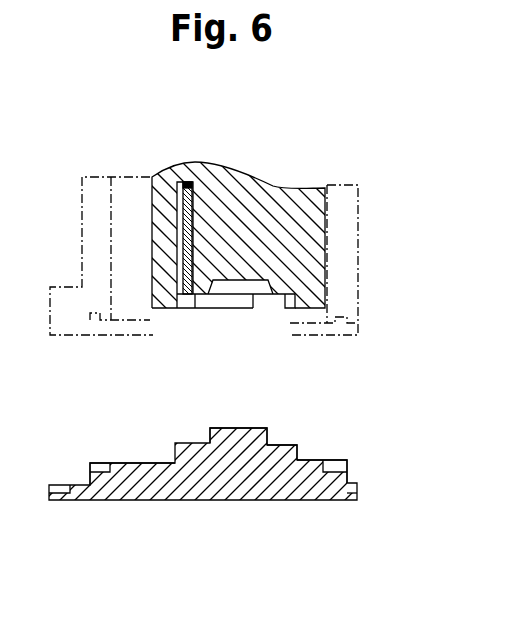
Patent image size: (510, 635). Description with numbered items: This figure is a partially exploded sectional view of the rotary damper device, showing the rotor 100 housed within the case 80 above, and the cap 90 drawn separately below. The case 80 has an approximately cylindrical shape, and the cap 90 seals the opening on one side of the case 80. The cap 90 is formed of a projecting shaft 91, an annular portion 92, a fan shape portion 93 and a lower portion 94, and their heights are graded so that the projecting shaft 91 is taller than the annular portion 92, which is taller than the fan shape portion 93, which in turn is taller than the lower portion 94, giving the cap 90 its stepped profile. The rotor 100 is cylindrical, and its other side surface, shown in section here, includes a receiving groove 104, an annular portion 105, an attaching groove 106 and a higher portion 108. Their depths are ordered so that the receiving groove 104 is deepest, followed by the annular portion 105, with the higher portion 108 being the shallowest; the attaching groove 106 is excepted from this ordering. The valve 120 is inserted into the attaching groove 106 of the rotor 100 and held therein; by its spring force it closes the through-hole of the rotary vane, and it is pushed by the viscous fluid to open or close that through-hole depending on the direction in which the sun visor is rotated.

The case 80 is at (352, 242).
The cap 90 is at (223, 500).
The projecting shaft 91 is at (233, 428).
The annular portion 92 is at (285, 444).
The fan shape portion 93 is at (315, 460).
The lower portion 94 is at (124, 462).
The rotor 100 is at (272, 187).
The receiving groove 104 is at (242, 288).
The annular portion 105 is at (198, 307).
The attaching groove 106 is at (177, 193).
The higher portion 108 is at (320, 308).
The valve 120 is at (187, 185).